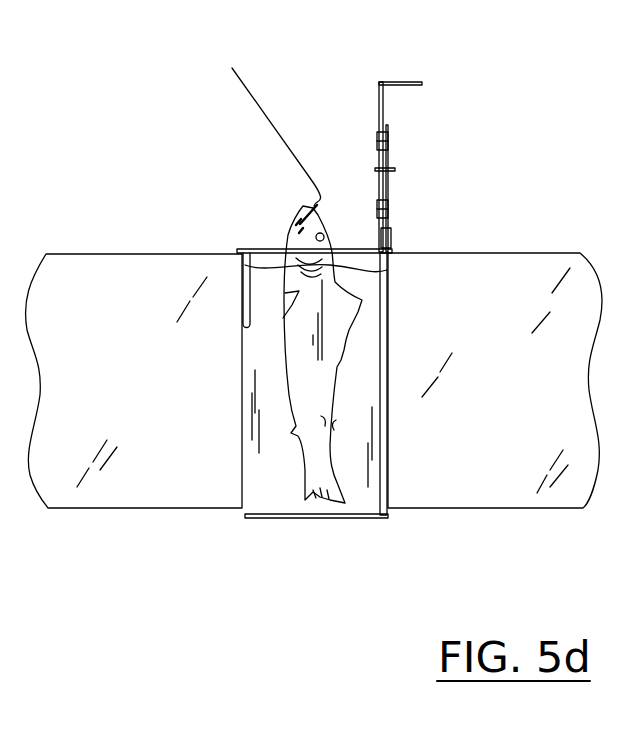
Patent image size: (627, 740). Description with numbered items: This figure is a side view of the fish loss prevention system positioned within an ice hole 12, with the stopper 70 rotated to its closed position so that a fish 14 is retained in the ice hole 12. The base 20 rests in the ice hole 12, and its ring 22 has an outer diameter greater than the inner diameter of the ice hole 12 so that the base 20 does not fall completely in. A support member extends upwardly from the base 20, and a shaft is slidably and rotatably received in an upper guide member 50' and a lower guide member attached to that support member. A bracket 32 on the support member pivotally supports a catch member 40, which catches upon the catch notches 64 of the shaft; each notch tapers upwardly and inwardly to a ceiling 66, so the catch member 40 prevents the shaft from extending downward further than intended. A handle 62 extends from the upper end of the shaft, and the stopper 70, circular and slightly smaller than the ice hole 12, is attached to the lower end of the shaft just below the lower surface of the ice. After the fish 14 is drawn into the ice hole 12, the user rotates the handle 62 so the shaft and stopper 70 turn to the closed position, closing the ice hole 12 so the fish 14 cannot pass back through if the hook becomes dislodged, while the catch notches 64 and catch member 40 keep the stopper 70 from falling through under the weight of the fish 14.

The ice hole 12 is at (250, 498).
The fish 14 is at (312, 505).
The base 20 is at (275, 240).
The ring 22 is at (241, 250).
The bracket 32 is at (389, 169).
The catch member 40 is at (398, 172).
The upper guide member 50' is at (343, 127).
The handle 62 is at (393, 81).
The catch notches 64 is at (390, 241).
The ceiling 66 is at (378, 101).
The stopper 70 is at (298, 517).